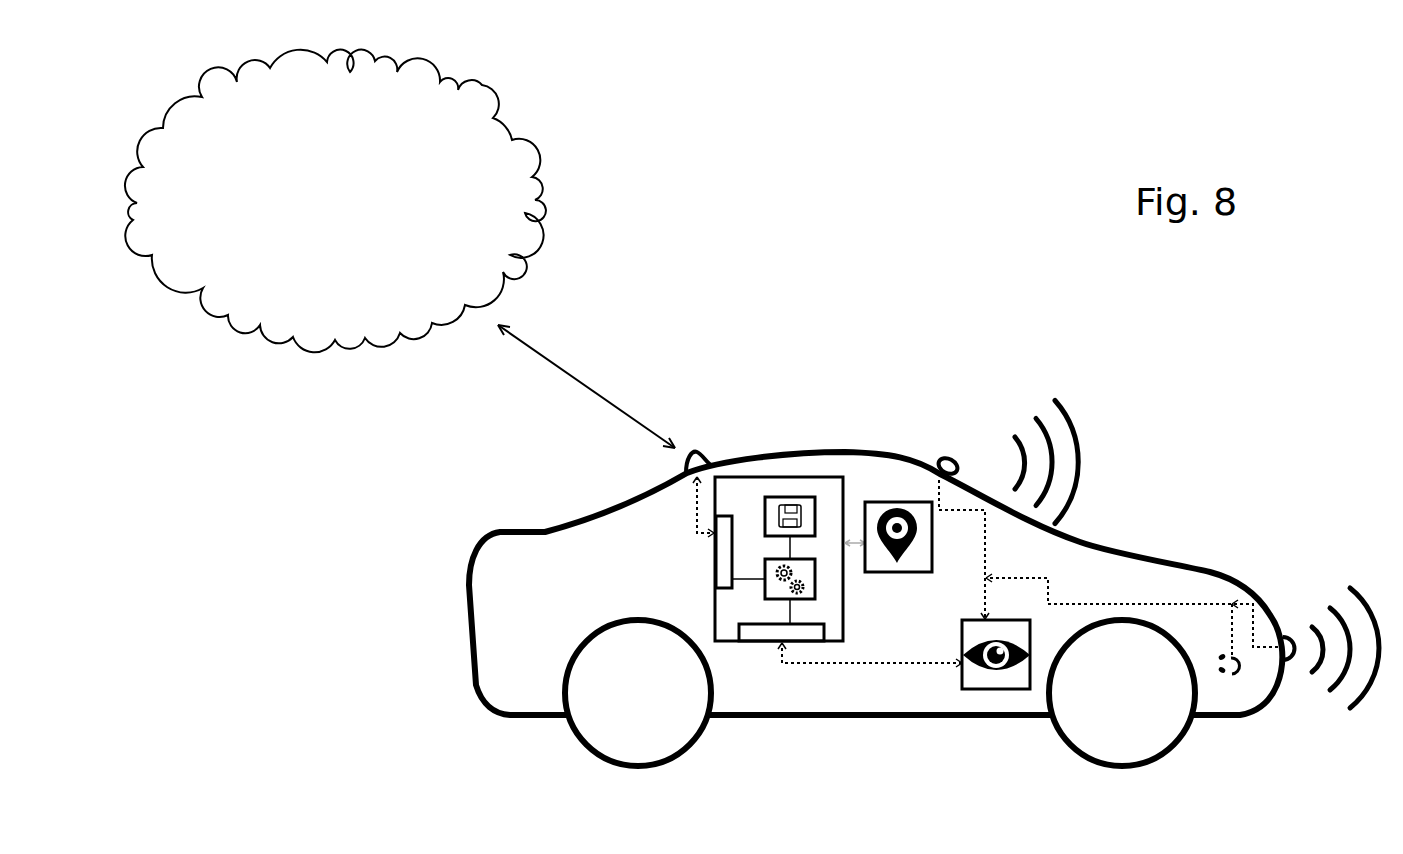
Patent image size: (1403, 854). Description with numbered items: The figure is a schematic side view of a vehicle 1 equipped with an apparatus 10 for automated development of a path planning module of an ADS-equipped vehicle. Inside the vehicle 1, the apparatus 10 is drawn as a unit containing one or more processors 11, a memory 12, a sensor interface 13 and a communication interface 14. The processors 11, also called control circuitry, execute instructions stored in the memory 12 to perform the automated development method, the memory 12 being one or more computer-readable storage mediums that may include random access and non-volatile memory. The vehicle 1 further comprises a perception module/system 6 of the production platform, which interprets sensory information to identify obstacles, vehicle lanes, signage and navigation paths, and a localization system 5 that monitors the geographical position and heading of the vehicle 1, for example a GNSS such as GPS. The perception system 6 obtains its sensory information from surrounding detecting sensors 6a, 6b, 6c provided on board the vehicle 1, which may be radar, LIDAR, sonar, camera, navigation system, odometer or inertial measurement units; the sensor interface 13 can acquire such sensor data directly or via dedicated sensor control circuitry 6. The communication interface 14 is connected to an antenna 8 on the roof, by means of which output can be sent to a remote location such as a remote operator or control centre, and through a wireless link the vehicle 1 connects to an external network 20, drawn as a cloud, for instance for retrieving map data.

The vehicle 1 is at (492, 712).
The localization system 5 is at (882, 502).
The perception module/system 6 is at (1008, 690).
The surrounding detecting sensor 6a is at (1233, 673).
The surrounding detecting sensor 6b is at (1288, 638).
The surrounding detecting sensor 6c is at (946, 459).
The antenna 8 is at (696, 456).
The apparatus 10 is at (770, 477).
The processor 11 is at (815, 588).
The memory 12 is at (790, 497).
The sensor interface 13 is at (762, 646).
The communication interface 14 is at (721, 562).
The external network 20 is at (478, 86).